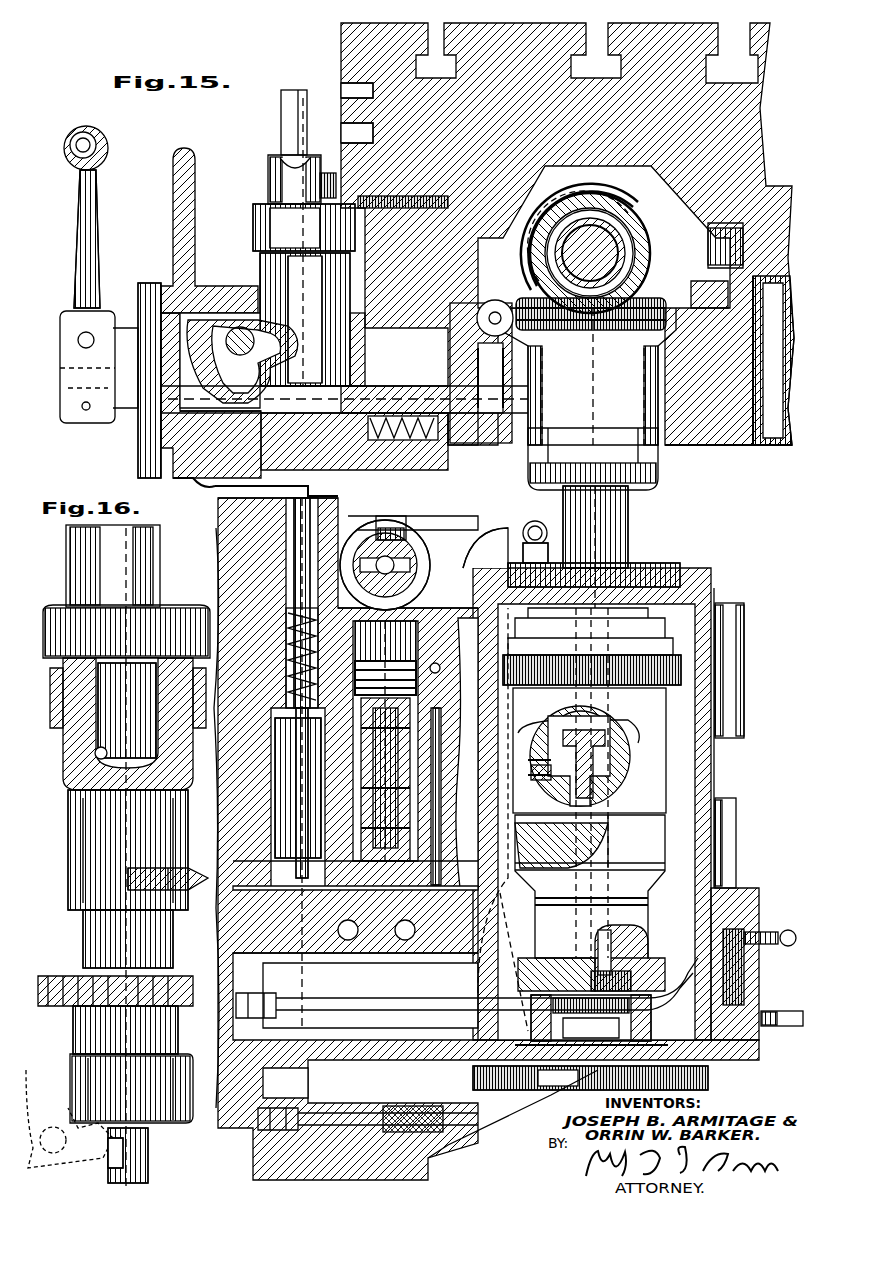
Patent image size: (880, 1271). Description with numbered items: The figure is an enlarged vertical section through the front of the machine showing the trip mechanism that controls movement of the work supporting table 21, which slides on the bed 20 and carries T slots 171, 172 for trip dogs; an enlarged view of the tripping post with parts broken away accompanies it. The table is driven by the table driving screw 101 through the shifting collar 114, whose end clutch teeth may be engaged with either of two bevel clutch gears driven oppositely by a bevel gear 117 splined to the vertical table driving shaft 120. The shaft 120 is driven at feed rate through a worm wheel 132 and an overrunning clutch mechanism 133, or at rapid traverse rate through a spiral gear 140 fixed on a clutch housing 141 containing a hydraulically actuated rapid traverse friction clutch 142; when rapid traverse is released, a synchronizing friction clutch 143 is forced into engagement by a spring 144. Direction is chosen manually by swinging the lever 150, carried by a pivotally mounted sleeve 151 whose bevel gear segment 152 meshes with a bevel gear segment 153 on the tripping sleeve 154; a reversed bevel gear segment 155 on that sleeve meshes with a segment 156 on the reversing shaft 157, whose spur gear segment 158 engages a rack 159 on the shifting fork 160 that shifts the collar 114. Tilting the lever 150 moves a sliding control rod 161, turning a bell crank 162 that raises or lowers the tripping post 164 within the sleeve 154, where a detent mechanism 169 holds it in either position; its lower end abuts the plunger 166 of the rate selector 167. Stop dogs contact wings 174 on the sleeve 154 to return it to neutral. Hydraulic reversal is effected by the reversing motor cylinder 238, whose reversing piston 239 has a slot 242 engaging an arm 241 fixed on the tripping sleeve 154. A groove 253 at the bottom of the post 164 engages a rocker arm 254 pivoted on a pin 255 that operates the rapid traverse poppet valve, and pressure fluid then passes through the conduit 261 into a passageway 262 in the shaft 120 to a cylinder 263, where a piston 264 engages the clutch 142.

In FIG. 16, the bed 20 is at (210, 528).
In FIG. 15, the work supporting table 21 is at (745, 112).
In FIG. 15, the table driving screw 101 is at (630, 220).
In FIG. 15, the shifting collar 114 is at (625, 205).
In FIG. 15, the bevel gear 117 is at (652, 330).
In FIG. 16, the table driving shaft 120 is at (620, 514).
In FIG. 16, the worm wheel 132 is at (642, 632).
In FIG. 16, the overrunning clutch mechanism 133 is at (618, 602).
In FIG. 16, the spiral gear 140 is at (518, 950).
In FIG. 16, the clutch housing 141 is at (645, 812).
In FIG. 16, the rapid traverse friction clutch 142 is at (600, 815).
In FIG. 16, the synchronizing friction clutch 143 is at (600, 715).
In FIG. 16, the spring 144 is at (523, 764).
In FIG. 15, the lever 150 is at (93, 214).
In FIG. 15, the sleeve 151 is at (199, 380).
In FIG. 15, the bevel gear segment 152 is at (200, 478).
In FIG. 15, the bevel gear segment 153 is at (232, 482).
In FIG. 16, the bevel gear segment 153 is at (50, 965).
In FIG. 15, the tripping sleeve 154 is at (290, 292).
In FIG. 16, the tripping sleeve 154 is at (70, 820).
In FIG. 15, the reversed bevel gear segment 155 is at (358, 333).
In FIG. 16, the reversed bevel gear segment 155 is at (185, 858).
In FIG. 15, the bevel gear segment 156 is at (398, 440).
In FIG. 15, the reversing shaft 157 is at (462, 446).
In FIG. 15, the spur gear segment 158 is at (480, 405).
In FIG. 15, the rack 159 is at (548, 340).
In FIG. 15, the shifting fork 160 is at (612, 184).
In FIG. 15, the control rod 161 is at (236, 347).
In FIG. 15, the bell crank 162 is at (232, 322).
In FIG. 16, the tripping post 164 is at (286, 535).
In FIG. 16, the plunger 166 is at (288, 584).
In FIG. 16, the rate selector 167 is at (270, 755).
In FIG. 16, the detent mechanism 169 is at (70, 745).
In FIG. 15, the T slot 171 is at (350, 82).
In FIG. 15, the T slot 172 is at (355, 125).
In FIG. 15, the wings 174 is at (297, 178).
In FIG. 16, the wings 174 is at (52, 606).
In FIG. 16, the reversing motor cylinder 238 is at (300, 548).
In FIG. 16, the reversing piston 239 is at (400, 538).
In FIG. 16, the arm 241 is at (385, 512).
In FIG. 16, the slot 242 is at (440, 520).
In FIG. 16, the groove 253 is at (120, 1150).
In FIG. 16, the rocker arm 254 is at (95, 1120).
In FIG. 16, the pin 255 is at (68, 1107).
In FIG. 16, the conduit 261 is at (478, 560).
In FIG. 16, the passageway 262 is at (640, 746).
In FIG. 16, the cylinder 263 is at (555, 712).
In FIG. 16, the piston 264 is at (522, 760).